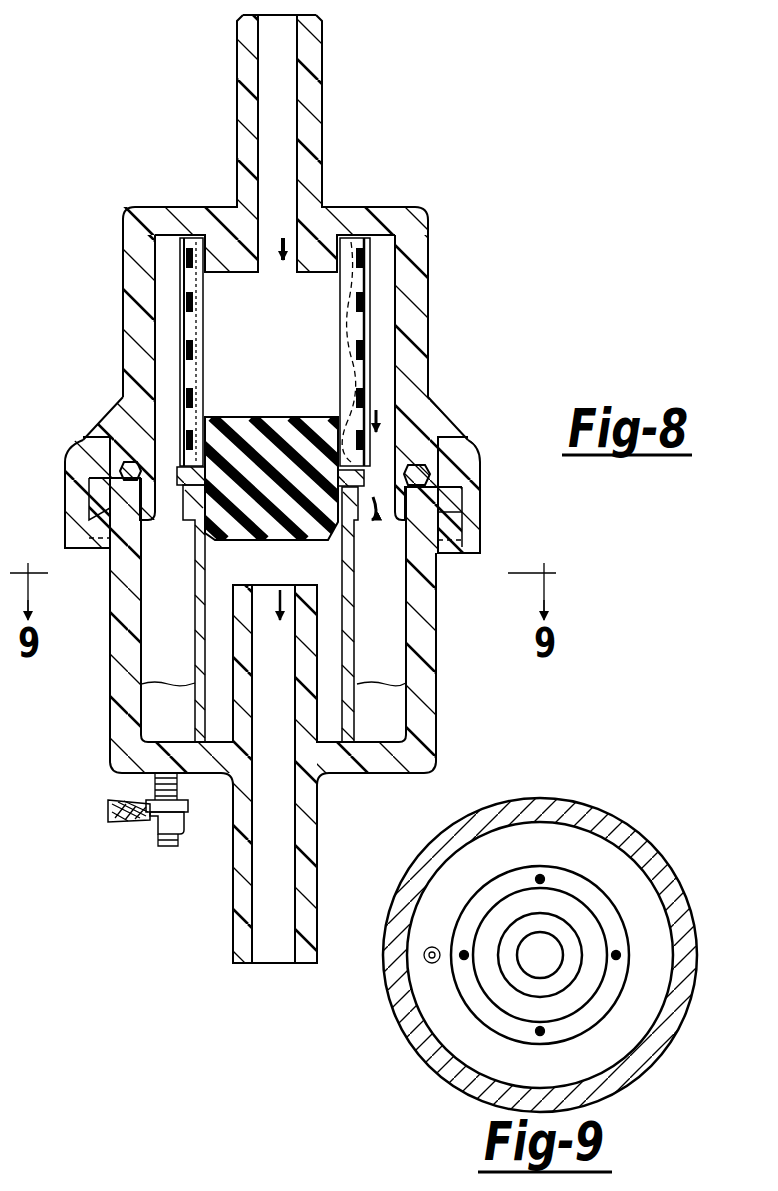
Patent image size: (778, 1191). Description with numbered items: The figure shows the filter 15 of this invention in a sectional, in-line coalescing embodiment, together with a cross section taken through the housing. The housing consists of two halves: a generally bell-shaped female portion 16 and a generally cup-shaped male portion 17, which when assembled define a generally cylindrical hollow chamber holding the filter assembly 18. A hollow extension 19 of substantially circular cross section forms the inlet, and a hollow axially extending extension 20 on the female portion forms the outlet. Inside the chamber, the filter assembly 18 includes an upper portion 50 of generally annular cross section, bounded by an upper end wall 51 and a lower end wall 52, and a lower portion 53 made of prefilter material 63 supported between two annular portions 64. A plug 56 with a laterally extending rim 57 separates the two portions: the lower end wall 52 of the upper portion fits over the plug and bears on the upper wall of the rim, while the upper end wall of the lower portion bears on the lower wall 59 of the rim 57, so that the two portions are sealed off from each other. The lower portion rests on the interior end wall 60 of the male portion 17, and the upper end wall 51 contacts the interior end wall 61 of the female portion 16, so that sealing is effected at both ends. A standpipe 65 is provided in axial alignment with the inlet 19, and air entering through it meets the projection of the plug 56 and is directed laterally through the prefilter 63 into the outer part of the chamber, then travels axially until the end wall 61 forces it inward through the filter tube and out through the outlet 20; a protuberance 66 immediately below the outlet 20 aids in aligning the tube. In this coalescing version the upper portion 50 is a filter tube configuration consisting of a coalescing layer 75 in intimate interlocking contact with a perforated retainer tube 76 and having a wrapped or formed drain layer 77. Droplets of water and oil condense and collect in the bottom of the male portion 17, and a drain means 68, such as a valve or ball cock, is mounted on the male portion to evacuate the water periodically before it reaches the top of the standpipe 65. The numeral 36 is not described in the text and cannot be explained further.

In FIG. 8, the filter 15 is at (292, 489).
In FIG. 9, the filter 15 is at (531, 932).
In FIG. 8, the bell-shaped female portion 16 is at (315, 284).
In FIG. 9, the bell-shaped female portion 16 is at (539, 848).
In FIG. 8, the cup-shaped male portion 17 is at (275, 720).
In FIG. 8, the filter assembly 18 is at (378, 402).
In FIG. 8, the hollow extension 19 is at (318, 880).
In FIG. 8, the axially extending extension 20 is at (324, 53).
In FIG. 9, the axially extending extension 20 is at (518, 993).
In FIG. 8, the mounting flange 36 is at (483, 502).
In FIG. 9, the mounting flange 36 is at (677, 873).
In FIG. 8, the upper portion 50 is at (121, 297).
In FIG. 8, the upper end wall 51 is at (182, 257).
In FIG. 8, the lower end wall 52 is at (258, 448).
In FIG. 8, the lower portion 53 is at (196, 690).
In FIG. 8, the plug 56 is at (340, 450).
In FIG. 8, the laterally extending rim 57 is at (136, 462).
In FIG. 8, the lower wall 59 is at (352, 498).
In FIG. 8, the interior end wall 60 is at (370, 748).
In FIG. 8, the interior end wall 61 is at (206, 235).
In FIG. 8, the prefilter material 63 is at (349, 636).
In FIG. 9, the prefilter material 63 is at (481, 910).
In FIG. 8, the annular portions 64 is at (405, 730).
In FIG. 9, the annular portions 64 is at (463, 1003).
In FIG. 8, the standpipe 65 is at (352, 618).
In FIG. 8, the protuberance 66 is at (281, 266).
In FIG. 8, the drain means 68 is at (110, 818).
In FIG. 8, the coalescing layer 75 is at (435, 302).
In FIG. 8, the perforated retainer tube 76 is at (377, 207).
In FIG. 8, the drain layer 77 is at (370, 274).